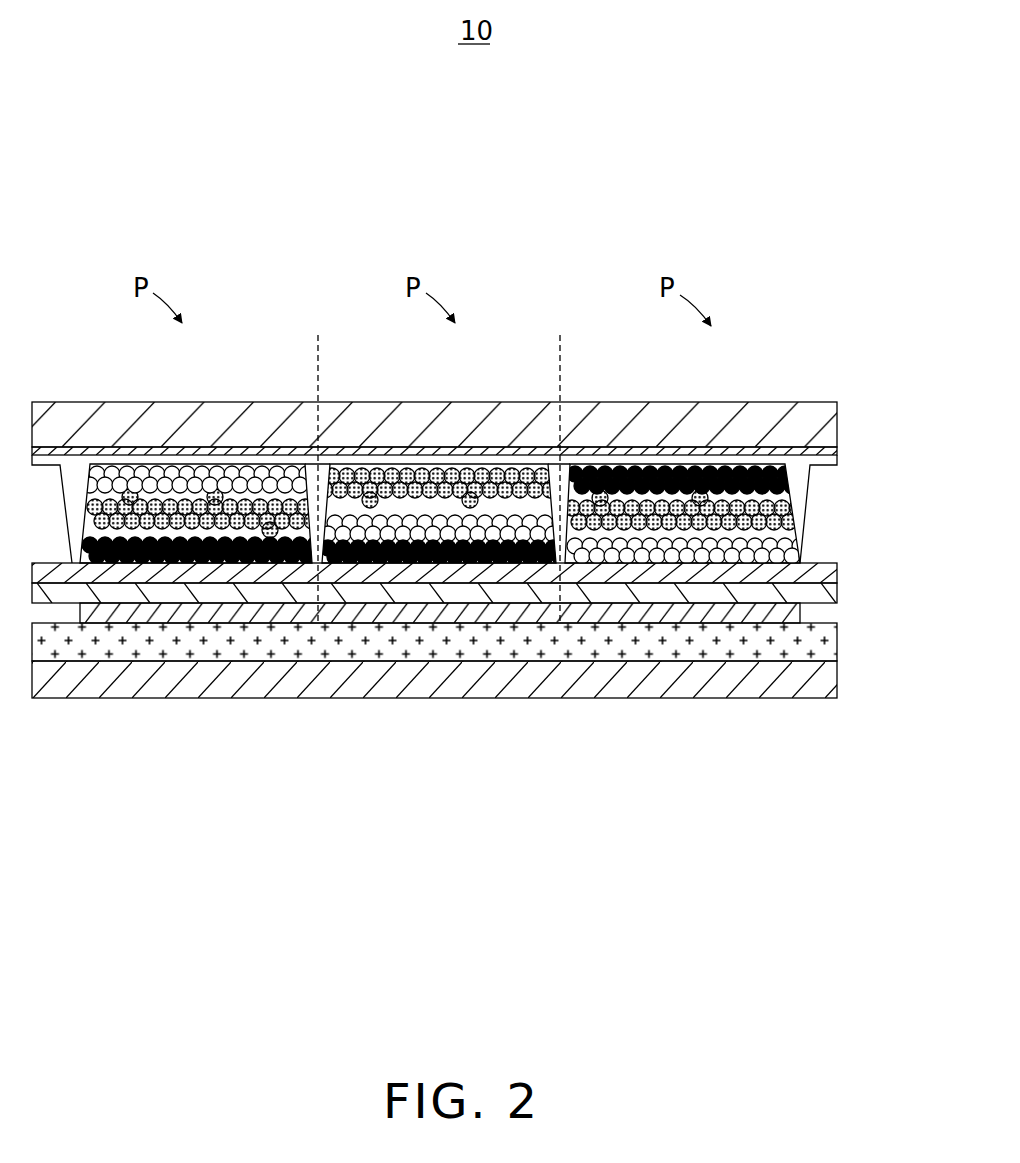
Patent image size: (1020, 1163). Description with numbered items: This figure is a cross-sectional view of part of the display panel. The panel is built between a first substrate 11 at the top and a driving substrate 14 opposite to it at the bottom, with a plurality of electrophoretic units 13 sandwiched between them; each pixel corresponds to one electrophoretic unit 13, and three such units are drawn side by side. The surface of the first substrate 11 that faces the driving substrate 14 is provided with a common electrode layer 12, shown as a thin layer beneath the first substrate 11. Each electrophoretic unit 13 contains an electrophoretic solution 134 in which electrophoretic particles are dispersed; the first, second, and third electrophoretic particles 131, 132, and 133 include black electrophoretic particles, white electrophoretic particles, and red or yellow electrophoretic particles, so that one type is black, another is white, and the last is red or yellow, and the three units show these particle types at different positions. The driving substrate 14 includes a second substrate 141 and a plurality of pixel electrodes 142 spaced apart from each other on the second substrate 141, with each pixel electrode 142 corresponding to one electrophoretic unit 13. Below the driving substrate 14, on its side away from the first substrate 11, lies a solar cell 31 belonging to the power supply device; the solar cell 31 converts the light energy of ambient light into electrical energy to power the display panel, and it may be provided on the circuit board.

The first substrate 11 is at (743, 415).
The common electrode layer 12 is at (790, 449).
The electrophoretic unit 13 is at (514, 625).
The first electrophoretic particles 131 is at (150, 535).
The electrophoretic solution 134 is at (218, 513).
The second electrophoretic particles 132 is at (213, 479).
The third electrophoretic particles 133 is at (778, 562).
The driving substrate 14 is at (434, 717).
The second substrate 141 is at (745, 645).
The pixel electrodes 142 is at (700, 613).
The solar cell 31 is at (212, 685).